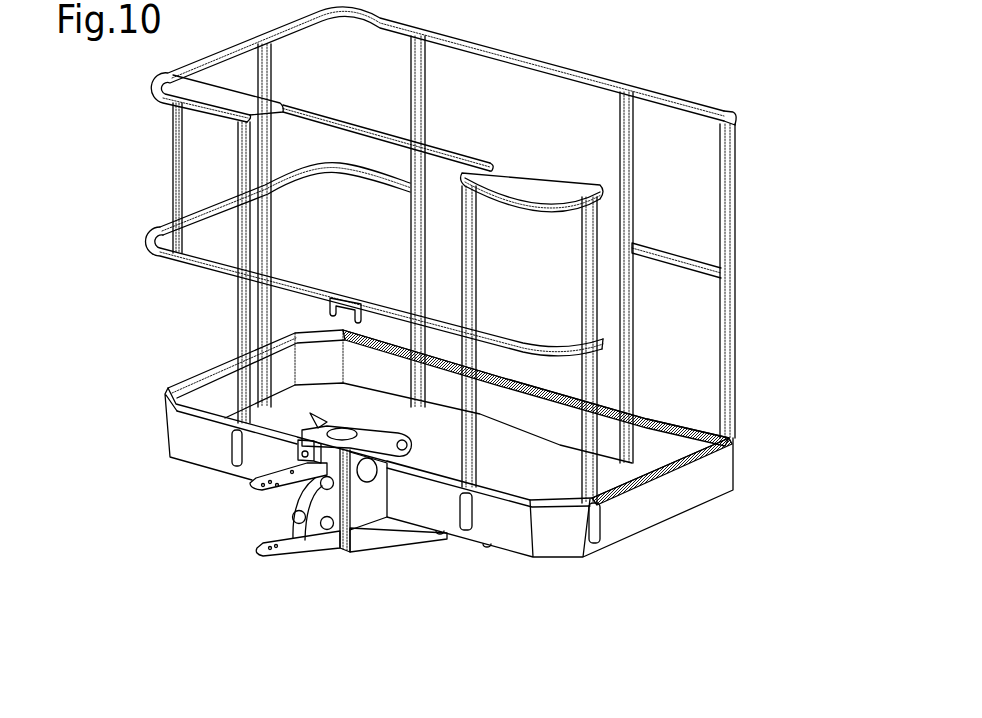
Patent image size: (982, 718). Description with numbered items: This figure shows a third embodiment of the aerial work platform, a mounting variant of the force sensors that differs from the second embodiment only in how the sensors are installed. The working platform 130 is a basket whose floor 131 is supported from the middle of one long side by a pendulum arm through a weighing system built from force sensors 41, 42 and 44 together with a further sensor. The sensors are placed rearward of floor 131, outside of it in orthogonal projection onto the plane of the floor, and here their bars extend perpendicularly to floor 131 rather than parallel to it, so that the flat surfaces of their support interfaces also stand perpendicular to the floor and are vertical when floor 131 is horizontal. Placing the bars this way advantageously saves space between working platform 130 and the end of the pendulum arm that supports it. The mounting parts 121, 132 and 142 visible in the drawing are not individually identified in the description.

The working platform 130 is at (751, 216).
The floor 131 is at (535, 470).
The mounting plate 132 is at (373, 535).
The top bracket plate 142 is at (316, 426).
The force sensor 41 is at (328, 546).
The force sensor 42 is at (260, 488).
The force sensor 44 is at (268, 466).
The lower support plate 121 is at (296, 551).